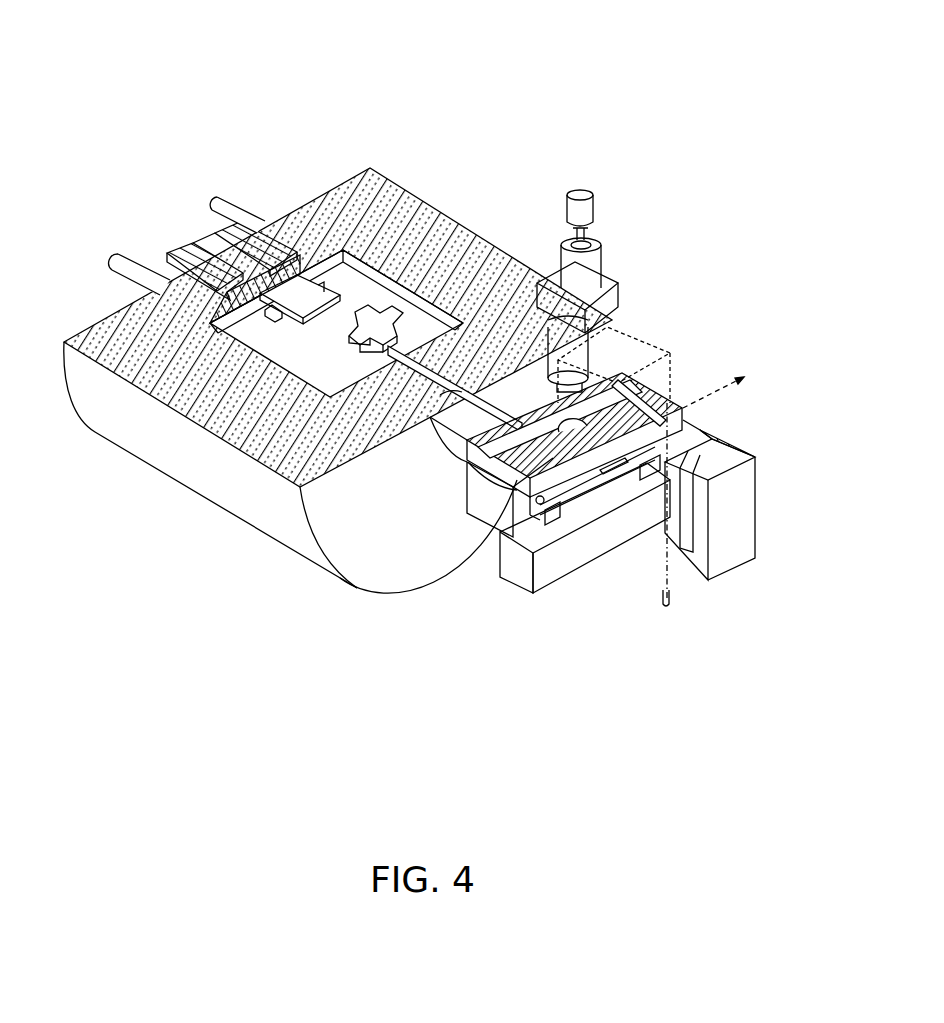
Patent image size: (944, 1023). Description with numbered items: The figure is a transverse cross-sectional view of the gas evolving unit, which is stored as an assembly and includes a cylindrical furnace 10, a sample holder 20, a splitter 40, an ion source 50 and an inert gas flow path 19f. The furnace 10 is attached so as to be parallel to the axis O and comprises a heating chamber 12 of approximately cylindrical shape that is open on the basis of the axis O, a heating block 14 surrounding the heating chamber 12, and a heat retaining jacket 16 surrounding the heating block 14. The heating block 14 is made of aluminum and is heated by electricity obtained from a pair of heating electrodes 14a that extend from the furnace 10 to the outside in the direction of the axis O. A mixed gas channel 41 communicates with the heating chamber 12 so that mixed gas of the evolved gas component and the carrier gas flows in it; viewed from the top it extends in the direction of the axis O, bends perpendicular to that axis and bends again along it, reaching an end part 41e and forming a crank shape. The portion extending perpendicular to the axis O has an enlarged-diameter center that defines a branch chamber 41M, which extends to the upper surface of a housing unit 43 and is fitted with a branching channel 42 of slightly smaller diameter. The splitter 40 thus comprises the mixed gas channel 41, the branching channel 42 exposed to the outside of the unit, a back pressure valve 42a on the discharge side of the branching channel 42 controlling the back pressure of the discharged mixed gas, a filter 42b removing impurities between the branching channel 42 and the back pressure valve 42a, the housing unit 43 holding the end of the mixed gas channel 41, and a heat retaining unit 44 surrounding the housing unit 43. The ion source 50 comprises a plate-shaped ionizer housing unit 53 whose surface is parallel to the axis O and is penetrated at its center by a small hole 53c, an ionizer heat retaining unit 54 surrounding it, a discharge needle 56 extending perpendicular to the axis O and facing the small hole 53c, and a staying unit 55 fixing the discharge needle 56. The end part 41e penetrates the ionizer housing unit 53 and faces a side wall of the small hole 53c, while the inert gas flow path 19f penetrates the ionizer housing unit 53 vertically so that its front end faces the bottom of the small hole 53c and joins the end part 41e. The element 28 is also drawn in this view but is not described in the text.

The furnace 10 is at (325, 306).
The heating chamber 12 is at (365, 315).
The heating block 14 is at (361, 281).
The heating electrodes 14a is at (220, 200).
The heat retaining jacket 16 is at (459, 205).
The inert gas flow path 19f is at (667, 598).
The sample holder 20 is at (178, 220).
The pressing block 28 is at (298, 300).
The splitter 40 is at (610, 516).
The mixed gas channel 41 is at (430, 400).
The branch chamber 41M is at (568, 545).
The end part 41e is at (677, 420).
The branching channel 42 is at (667, 291).
The back pressure valve 42a is at (593, 262).
The filter 42b is at (578, 358).
The housing unit 43 is at (517, 487).
The heat retaining unit 44 is at (485, 510).
The ion source 50 is at (763, 522).
The ionizer housing unit 53 is at (755, 428).
The small hole 53c is at (682, 425).
The ionizer heat retaining unit 54 is at (755, 455).
The staying unit 55 is at (600, 540).
The discharge needle 56 is at (640, 540).